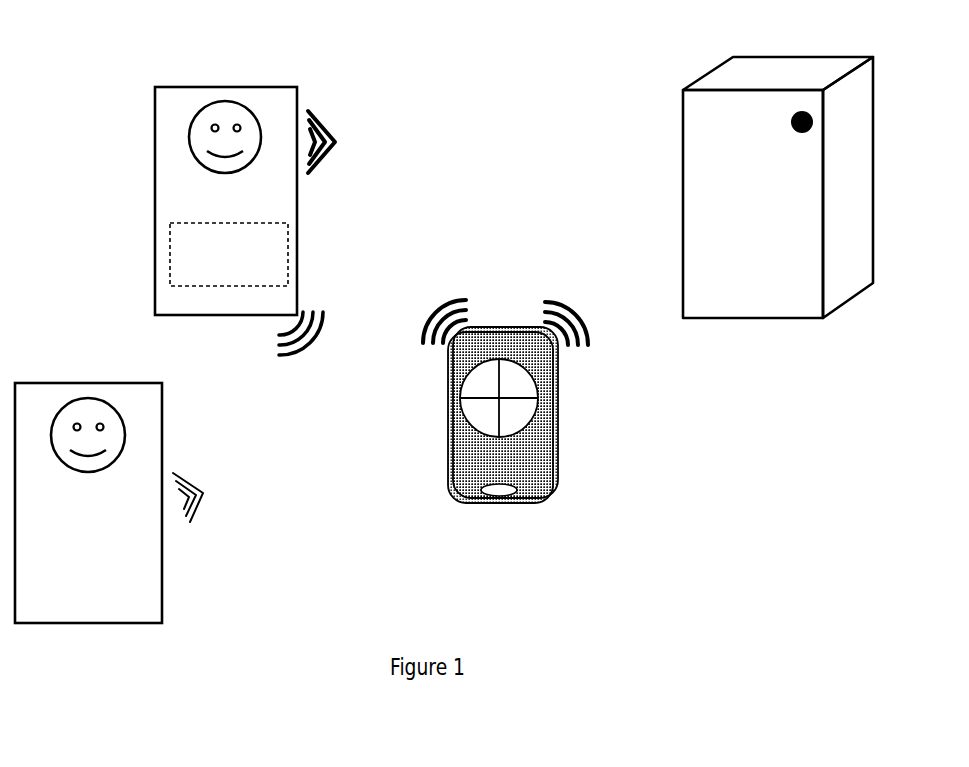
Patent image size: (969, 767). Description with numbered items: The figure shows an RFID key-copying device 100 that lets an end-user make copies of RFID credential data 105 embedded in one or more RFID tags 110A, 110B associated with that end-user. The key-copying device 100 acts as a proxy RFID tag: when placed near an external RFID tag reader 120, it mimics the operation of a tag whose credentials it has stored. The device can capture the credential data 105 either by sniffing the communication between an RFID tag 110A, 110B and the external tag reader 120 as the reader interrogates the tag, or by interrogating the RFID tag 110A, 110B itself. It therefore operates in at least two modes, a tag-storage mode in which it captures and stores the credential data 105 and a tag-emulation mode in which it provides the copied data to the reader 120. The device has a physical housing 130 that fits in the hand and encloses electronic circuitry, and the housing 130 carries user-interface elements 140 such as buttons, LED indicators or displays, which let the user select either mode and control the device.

The RFID key-copying device 100 is at (505, 427).
The RFID credential data 105 is at (229, 245).
The RFID tag 110A is at (245, 199).
The RFID tag 110B is at (109, 482).
The external RFID tag reader 120 is at (778, 168).
The physical housing 130 is at (445, 443).
The user-interface elements 140 is at (518, 410).